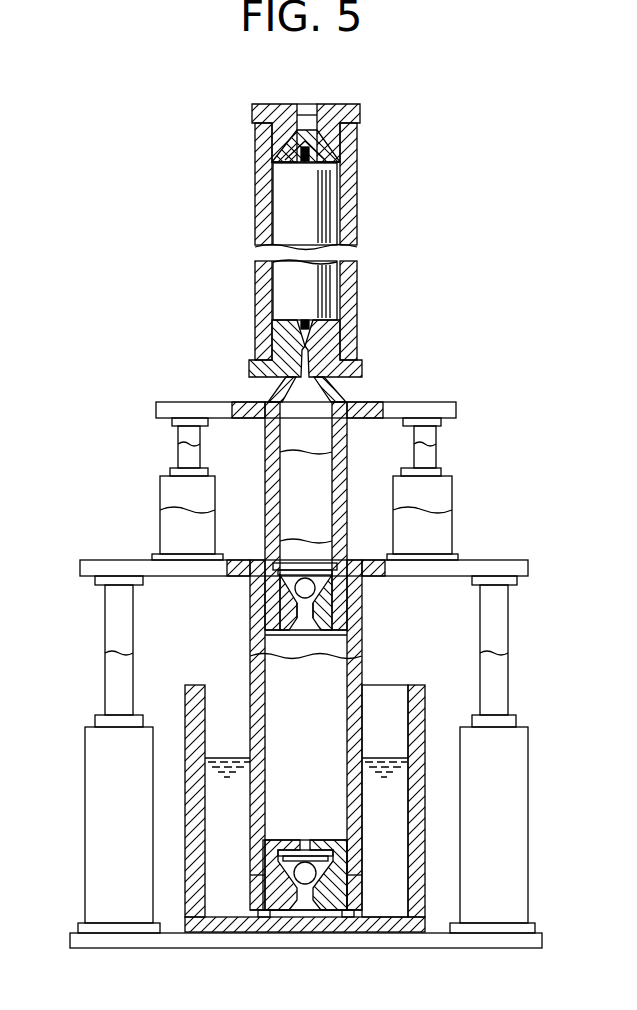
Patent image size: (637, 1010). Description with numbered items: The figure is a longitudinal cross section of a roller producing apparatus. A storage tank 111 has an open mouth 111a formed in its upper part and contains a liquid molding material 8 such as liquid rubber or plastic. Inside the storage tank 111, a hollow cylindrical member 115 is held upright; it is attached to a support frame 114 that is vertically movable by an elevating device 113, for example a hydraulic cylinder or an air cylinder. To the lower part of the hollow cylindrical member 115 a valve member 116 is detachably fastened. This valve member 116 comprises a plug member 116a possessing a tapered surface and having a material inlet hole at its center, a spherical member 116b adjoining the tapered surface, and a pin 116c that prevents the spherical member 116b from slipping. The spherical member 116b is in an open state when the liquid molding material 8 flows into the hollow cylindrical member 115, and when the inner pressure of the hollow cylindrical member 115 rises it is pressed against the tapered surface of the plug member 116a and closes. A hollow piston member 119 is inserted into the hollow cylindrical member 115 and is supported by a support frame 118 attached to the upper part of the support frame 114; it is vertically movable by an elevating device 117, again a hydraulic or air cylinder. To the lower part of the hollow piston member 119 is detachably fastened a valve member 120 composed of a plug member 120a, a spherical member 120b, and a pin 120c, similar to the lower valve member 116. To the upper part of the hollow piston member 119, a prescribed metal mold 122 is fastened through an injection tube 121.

The liquid molding material 8 is at (225, 896).
The storage tank 111 is at (319, 810).
The open mouth 111a is at (384, 690).
The elevating device 113 is at (100, 790).
The support frame 114 is at (520, 562).
The hollow cylindrical member 115 is at (362, 668).
The valve member 116 is at (425, 886).
The plug member 116a is at (358, 880).
The spherical member 116b is at (305, 884).
The pin 116c is at (299, 851).
The elevating device 117 is at (432, 487).
The support frame 118 is at (447, 402).
The hollow piston member 119 is at (437, 454).
The valve member 120 is at (340, 604).
The plug member 120a is at (338, 601).
The spherical member 120b is at (304, 614).
The pin 120c is at (312, 566).
The injection tube 121 is at (340, 391).
The metal mold 122 is at (368, 300).